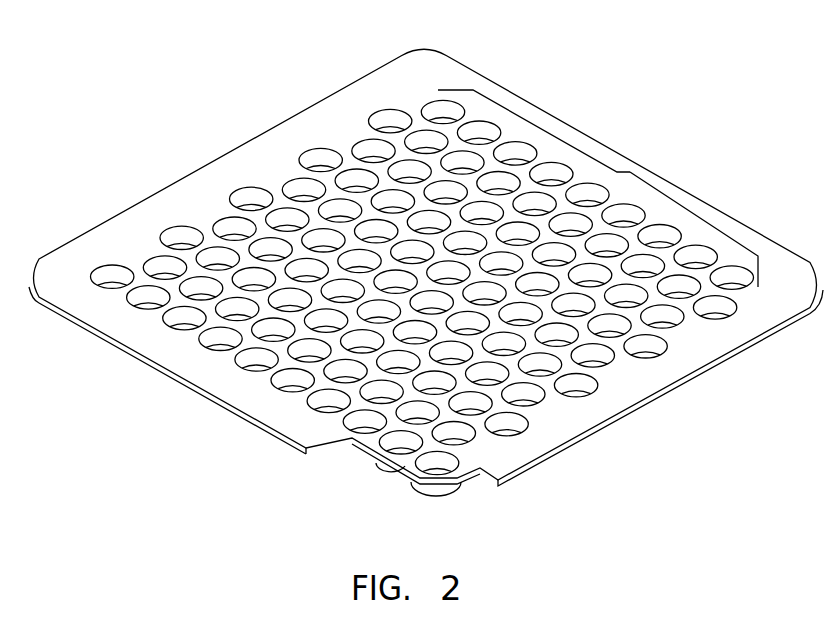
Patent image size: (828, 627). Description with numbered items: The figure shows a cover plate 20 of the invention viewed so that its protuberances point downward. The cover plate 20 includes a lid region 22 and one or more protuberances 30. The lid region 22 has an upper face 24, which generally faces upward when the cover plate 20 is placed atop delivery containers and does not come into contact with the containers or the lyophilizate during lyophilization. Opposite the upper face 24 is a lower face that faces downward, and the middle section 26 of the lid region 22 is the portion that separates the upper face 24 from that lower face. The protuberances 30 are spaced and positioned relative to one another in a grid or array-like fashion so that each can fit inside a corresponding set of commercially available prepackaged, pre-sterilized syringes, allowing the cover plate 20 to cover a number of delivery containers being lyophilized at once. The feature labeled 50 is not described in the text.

The cover plate 20 is at (426, 283).
The lid region 22 is at (500, 90).
The upper face 24 is at (627, 389).
The middle section 26 is at (752, 344).
The protuberance 30 is at (438, 498).
The rim segment 50 is at (635, 167).